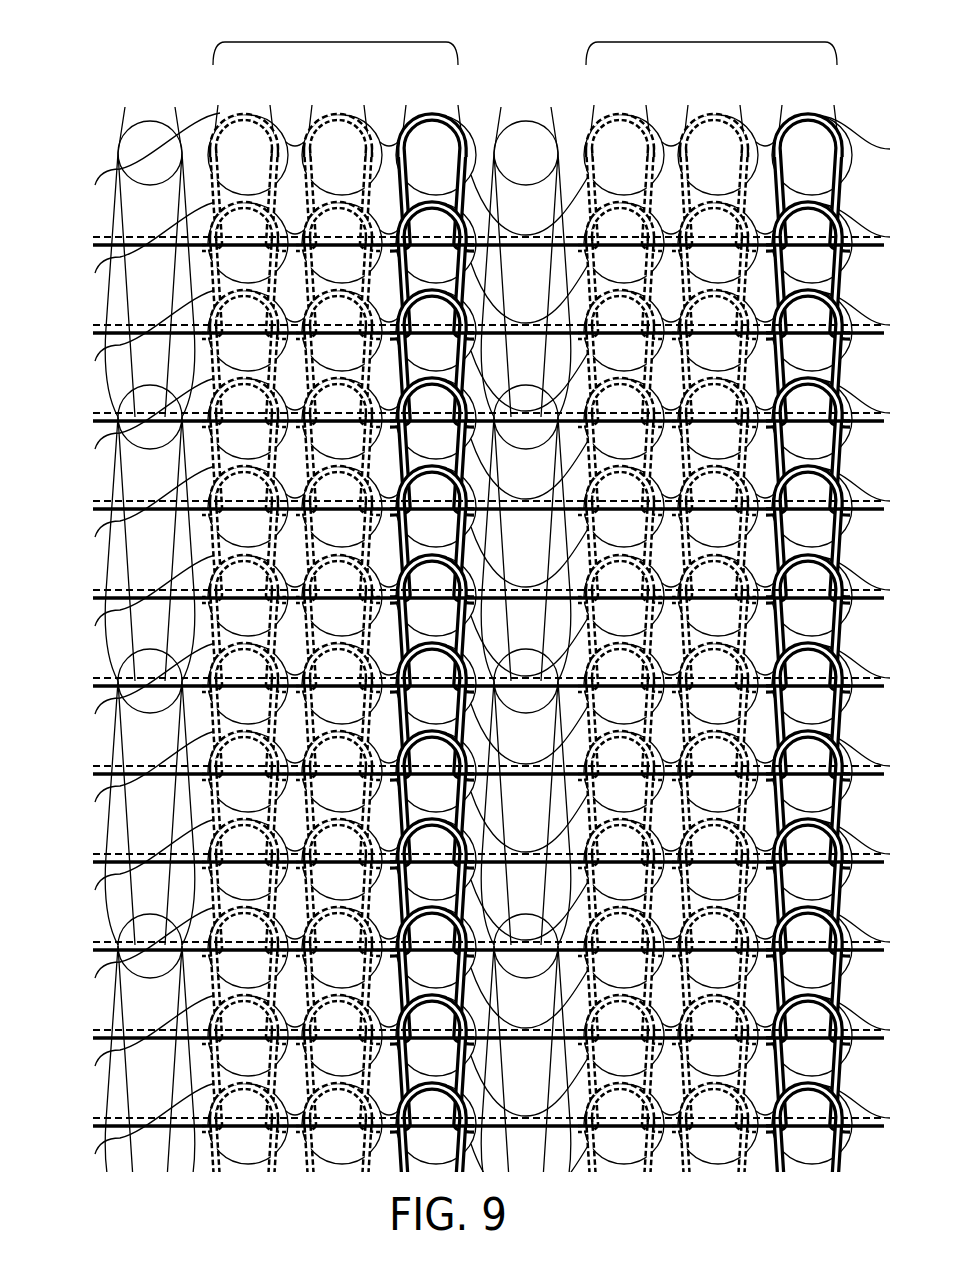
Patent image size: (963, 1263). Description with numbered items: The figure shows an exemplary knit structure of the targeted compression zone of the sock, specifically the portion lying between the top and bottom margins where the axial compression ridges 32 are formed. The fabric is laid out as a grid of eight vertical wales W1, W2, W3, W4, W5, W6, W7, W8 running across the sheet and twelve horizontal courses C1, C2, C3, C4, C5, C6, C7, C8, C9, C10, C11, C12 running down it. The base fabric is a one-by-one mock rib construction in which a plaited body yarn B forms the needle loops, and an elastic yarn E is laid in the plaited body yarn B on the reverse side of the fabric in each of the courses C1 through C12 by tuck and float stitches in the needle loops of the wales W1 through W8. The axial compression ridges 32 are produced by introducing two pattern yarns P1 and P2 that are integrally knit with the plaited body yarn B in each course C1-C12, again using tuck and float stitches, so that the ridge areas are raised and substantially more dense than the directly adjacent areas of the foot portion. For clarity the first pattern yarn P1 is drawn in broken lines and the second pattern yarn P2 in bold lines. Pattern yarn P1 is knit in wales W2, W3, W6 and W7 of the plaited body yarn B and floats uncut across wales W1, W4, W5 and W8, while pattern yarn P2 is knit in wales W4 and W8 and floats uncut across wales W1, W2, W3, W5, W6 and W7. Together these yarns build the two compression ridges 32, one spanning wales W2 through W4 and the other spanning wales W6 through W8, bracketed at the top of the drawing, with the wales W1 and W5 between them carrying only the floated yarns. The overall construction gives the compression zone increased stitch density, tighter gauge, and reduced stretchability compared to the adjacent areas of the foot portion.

The axial compression ridges 32 is at (303, 42).
The wale W1 is at (119, 630).
The wale W2 is at (245, 643).
The wale W3 is at (339, 643).
The wale W4 is at (433, 643).
The wale W5 is at (526, 639).
The wale W6 is at (621, 643).
The wale W7 is at (715, 643).
The wale W8 is at (809, 643).
The plaited body yarn B is at (125, 120).
The elastic yarn E is at (93, 162).
The pattern yarn P1 is at (95, 240).
The pattern yarn P2 is at (95, 413).
The course C1 is at (100, 170).
The course C2 is at (96, 246).
The course C3 is at (96, 335).
The course C4 is at (132, 423).
The course C5 is at (135, 510).
The course C6 is at (135, 599).
The course C7 is at (135, 687).
The course C8 is at (135, 775).
The course C9 is at (135, 863).
The course C10 is at (135, 951).
The course C11 is at (135, 1039).
The course C12 is at (135, 1127).